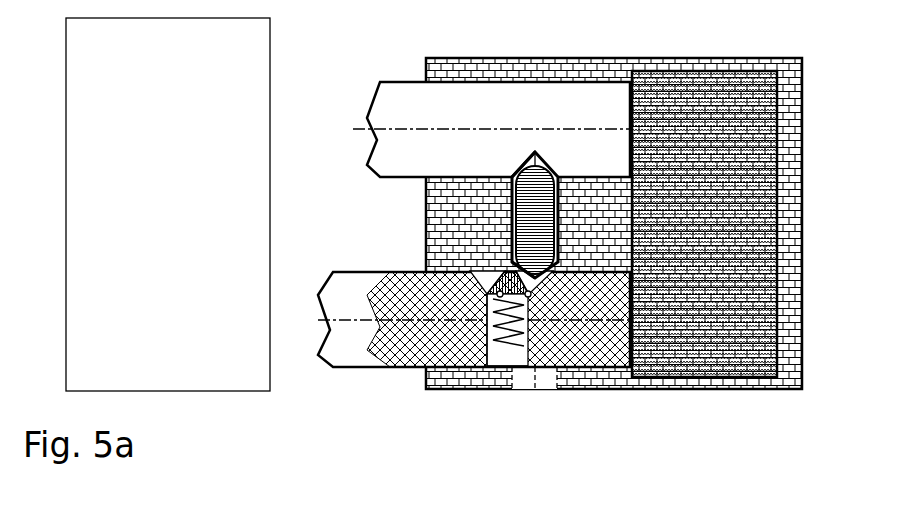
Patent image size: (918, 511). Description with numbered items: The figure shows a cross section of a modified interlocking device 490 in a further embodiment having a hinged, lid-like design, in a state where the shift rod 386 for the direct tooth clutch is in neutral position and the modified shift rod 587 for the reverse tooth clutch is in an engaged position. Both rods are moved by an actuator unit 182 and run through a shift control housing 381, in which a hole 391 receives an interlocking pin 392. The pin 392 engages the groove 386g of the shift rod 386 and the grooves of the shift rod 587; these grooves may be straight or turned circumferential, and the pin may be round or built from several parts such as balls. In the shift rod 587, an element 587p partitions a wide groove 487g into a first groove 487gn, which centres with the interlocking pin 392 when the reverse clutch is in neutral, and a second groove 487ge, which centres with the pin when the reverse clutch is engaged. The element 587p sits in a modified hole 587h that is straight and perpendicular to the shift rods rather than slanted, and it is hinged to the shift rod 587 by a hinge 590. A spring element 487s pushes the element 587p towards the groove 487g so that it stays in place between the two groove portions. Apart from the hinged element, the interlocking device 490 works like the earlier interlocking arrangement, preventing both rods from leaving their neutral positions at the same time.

The interlocking device 490 is at (126, 102).
The hinge 590 is at (549, 297).
The shift control housing 381 is at (414, 71).
The shift rod 386 is at (491, 129).
The groove 386g is at (507, 163).
The hole 391 is at (494, 183).
The interlocking pin 392 is at (537, 200).
The first groove 487gn is at (510, 254).
The second groove 487ge is at (470, 280).
The wide groove 487g is at (360, 291).
The element 587p is at (353, 314).
The spring element 487s is at (472, 341).
The hole 587h is at (485, 349).
The shift rod 587 is at (337, 369).
The actuator unit 182 is at (704, 224).